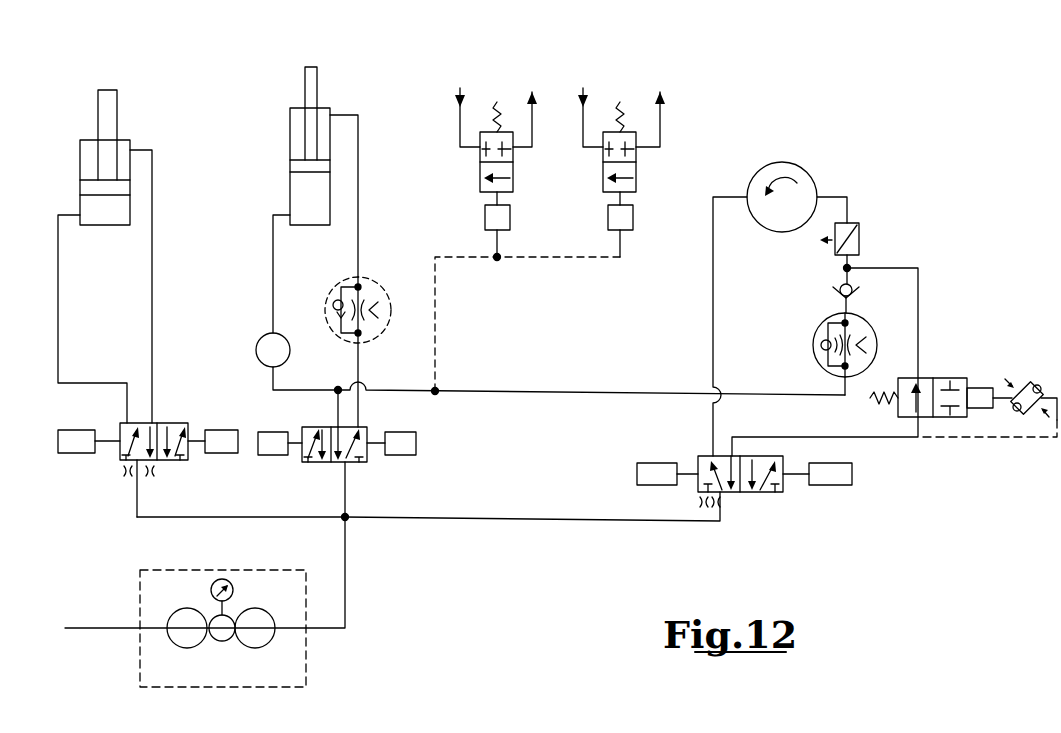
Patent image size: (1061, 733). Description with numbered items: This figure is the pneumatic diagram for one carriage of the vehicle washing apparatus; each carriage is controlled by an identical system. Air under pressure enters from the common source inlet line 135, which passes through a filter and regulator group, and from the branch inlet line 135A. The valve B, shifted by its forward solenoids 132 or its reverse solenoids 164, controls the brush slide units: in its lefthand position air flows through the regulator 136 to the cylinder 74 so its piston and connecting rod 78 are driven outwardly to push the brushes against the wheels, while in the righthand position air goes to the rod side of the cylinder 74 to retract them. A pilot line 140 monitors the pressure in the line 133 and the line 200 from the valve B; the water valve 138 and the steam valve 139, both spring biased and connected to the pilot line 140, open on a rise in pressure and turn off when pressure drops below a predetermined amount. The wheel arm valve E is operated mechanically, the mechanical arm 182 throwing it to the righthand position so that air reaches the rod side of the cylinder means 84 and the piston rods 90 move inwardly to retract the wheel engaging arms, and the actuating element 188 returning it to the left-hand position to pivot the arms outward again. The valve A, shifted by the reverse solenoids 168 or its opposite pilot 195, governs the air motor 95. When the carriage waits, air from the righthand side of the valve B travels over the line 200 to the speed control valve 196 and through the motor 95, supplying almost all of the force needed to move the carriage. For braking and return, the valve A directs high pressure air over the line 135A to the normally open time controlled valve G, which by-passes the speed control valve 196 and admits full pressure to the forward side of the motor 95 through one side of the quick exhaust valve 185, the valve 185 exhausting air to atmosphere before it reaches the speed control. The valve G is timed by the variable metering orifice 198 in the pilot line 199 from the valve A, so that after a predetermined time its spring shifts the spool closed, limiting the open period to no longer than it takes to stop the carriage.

The cylinder 74 is at (292, 164).
The connecting rod 78 is at (311, 88).
The cylinder means 84 is at (131, 133).
The piston rods 90 is at (104, 95).
The air motor 95 is at (800, 178).
The forward solenoids 132 is at (270, 434).
The line 133 is at (337, 405).
The inlet line 135 is at (345, 572).
The inlet line 135A is at (428, 490).
The regulator 136 is at (263, 337).
The water valve 138 is at (486, 189).
The steam valve 139 is at (608, 185).
The pilot line 140 is at (435, 308).
The solenoids 164 is at (400, 454).
The reverse solenoids 168 is at (656, 470).
The mechanical arm 182 is at (64, 437).
The quick exhaust valve 185 is at (861, 250).
The actuating element 188 is at (214, 434).
The pilot actuator 195 is at (849, 478).
The speed control valve 196 is at (815, 329).
The variable metering orifice 198 is at (1031, 385).
The pilot line 199 is at (1020, 445).
The line 200 is at (538, 389).
The valve A is at (786, 494).
The valve B is at (326, 464).
The wheel arm valve E is at (184, 464).
The time controlled valve G is at (938, 377).